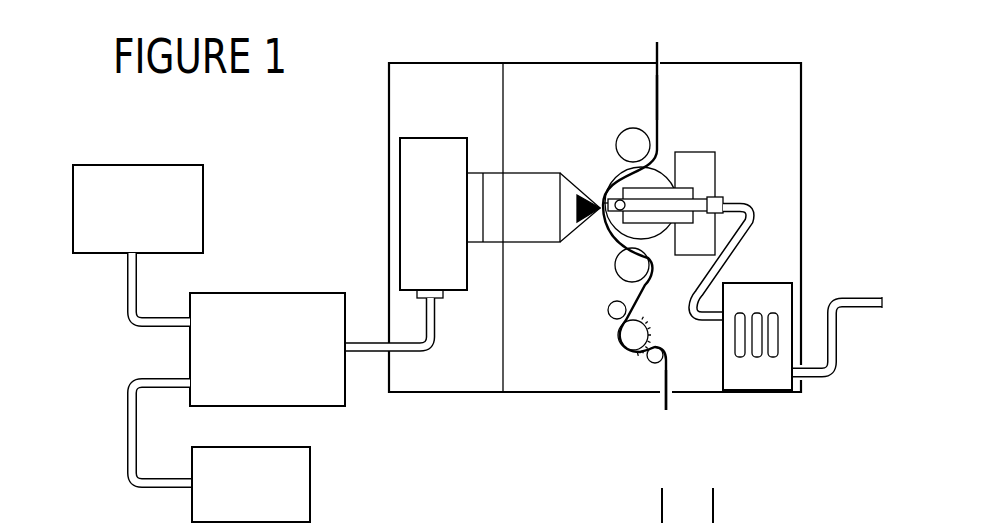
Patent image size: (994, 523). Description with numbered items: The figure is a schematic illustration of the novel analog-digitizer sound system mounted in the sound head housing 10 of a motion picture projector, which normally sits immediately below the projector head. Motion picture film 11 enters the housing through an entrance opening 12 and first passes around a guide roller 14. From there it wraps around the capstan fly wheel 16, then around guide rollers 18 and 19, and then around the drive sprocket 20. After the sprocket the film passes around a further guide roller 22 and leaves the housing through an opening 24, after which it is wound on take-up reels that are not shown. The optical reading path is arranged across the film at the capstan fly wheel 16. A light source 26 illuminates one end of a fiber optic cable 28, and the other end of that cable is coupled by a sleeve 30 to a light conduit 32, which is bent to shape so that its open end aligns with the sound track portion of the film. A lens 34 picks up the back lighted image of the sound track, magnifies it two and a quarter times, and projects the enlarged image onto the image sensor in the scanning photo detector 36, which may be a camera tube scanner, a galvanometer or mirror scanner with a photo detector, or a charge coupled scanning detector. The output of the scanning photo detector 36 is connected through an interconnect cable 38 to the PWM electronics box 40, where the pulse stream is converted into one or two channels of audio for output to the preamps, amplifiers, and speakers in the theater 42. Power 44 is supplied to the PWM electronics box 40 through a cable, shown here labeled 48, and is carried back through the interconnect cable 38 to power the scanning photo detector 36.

The sound head housing 10 is at (813, 55).
The motion picture film 11 is at (654, 91).
The entrance opening 12 is at (660, 58).
The guide roller 14 is at (618, 138).
The capstan fly wheel 16 is at (655, 168).
The guide roller 18 is at (616, 272).
The guide roller 19 is at (608, 308).
The drive sprocket 20 is at (618, 340).
The guide roller 22 is at (650, 363).
The exit opening 24 is at (668, 393).
The light source 26 is at (777, 282).
The fiber optic cable 28 is at (760, 218).
The sleeve 30 is at (724, 198).
The light conduit 32 is at (616, 216).
The lens 34 is at (548, 235).
The scanning photo detector 36 is at (408, 183).
The interconnect cable 38 is at (372, 340).
The PWM electronics box 40 is at (243, 292).
The theater 42 is at (312, 480).
The power 44 is at (82, 212).
The power cable 48 is at (125, 290).